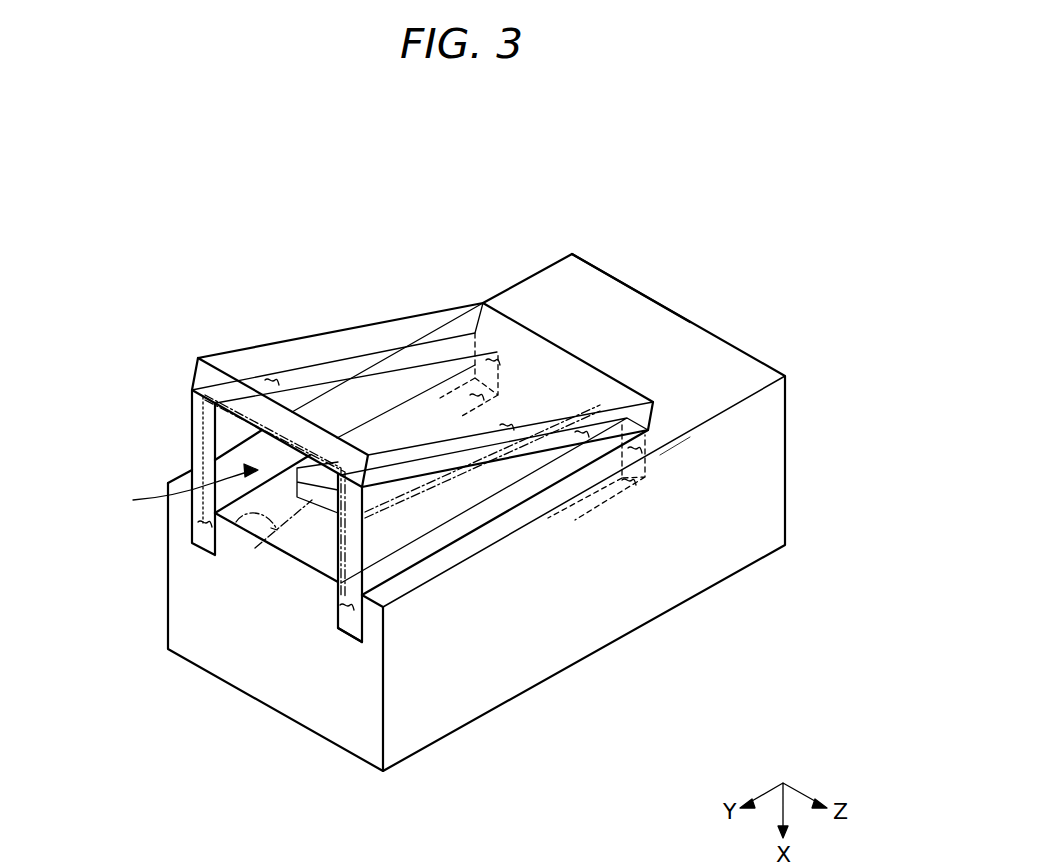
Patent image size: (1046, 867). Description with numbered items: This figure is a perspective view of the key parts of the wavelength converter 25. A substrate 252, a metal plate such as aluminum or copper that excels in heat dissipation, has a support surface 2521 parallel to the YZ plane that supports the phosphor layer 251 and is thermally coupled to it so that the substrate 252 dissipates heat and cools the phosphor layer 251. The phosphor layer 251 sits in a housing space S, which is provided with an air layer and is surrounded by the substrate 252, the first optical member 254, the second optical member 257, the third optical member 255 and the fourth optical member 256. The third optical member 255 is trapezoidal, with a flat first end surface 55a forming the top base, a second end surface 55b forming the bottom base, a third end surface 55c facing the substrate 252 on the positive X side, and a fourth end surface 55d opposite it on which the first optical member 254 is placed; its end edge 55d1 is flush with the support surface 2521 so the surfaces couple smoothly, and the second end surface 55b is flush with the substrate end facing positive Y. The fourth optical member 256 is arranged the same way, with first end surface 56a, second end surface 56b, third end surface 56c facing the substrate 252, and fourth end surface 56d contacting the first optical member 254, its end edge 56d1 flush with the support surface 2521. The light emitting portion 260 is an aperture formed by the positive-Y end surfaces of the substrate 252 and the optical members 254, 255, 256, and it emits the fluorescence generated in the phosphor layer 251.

The wavelength converter 25 is at (736, 165).
The phosphor layer 251 is at (315, 515).
The substrate 252 is at (768, 481).
The support surface 2521 is at (630, 305).
The first optical member 254 is at (360, 330).
The third optical member 255 is at (547, 490).
The fourth optical member 256 is at (197, 428).
The second optical member 257 is at (197, 420).
The light emitting portion 260 is at (283, 443).
The first end surface 55a is at (672, 440).
The second end surface 55b is at (342, 611).
The third end surface 55c is at (628, 487).
The fourth end surface 55d is at (580, 412).
The end edge 55d1 is at (640, 422).
The first end surface 56a is at (492, 372).
The second end surface 56b is at (200, 526).
The third end surface 56c is at (505, 428).
The fourth end surface 56d is at (268, 380).
The end edge 56d1 is at (505, 335).
The housing space S is at (187, 506).